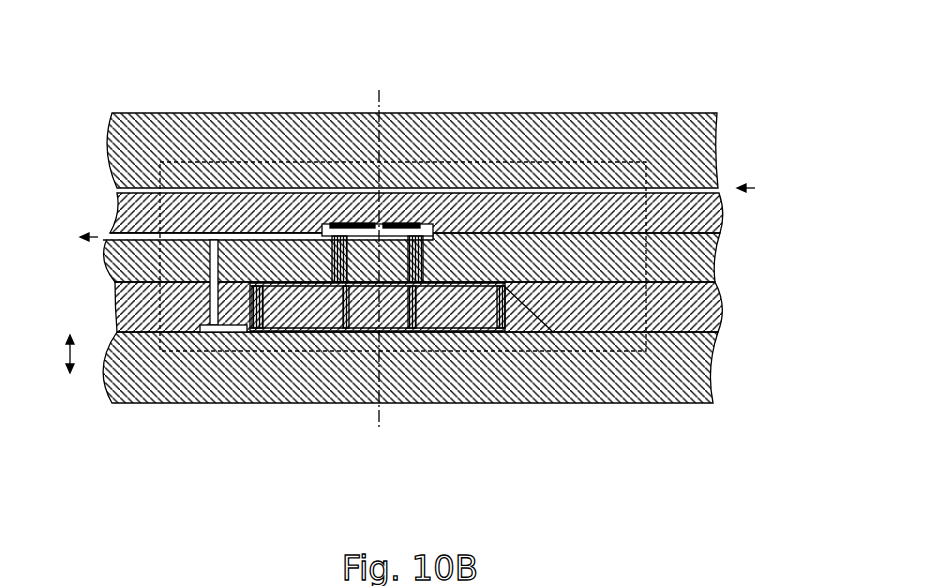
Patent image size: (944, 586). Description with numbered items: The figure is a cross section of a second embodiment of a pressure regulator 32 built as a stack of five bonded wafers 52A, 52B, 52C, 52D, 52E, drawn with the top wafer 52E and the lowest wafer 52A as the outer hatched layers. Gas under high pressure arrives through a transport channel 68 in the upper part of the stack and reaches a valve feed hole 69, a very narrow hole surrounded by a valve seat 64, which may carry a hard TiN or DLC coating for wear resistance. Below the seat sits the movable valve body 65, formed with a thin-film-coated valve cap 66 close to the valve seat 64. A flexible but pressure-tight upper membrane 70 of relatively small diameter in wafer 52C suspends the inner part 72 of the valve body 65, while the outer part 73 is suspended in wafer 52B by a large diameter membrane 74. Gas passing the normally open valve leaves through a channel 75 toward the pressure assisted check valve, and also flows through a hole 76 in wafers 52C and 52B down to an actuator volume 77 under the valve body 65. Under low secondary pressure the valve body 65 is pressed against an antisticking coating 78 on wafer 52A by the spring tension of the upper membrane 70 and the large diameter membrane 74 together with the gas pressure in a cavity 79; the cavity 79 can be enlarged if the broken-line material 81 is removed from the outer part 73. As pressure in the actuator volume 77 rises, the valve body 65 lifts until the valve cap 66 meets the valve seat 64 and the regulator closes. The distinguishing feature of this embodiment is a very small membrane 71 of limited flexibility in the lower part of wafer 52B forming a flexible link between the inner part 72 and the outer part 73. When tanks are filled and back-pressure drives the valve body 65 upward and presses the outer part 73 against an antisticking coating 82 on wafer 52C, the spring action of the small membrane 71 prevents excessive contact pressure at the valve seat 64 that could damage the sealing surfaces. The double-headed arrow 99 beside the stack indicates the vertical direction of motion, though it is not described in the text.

The wafer 52A is at (710, 367).
The wafer 52B is at (716, 308).
The wafer 52C is at (715, 250).
The wafer 52D is at (718, 224).
The wafer 52E is at (708, 141).
The pressure regulator 32 is at (615, 333).
The valve seat 64 is at (355, 224).
The valve body 65 is at (366, 333).
The valve cap 66 is at (384, 224).
The transport channel 68 is at (592, 190).
The valve feed hole 69 is at (377, 115).
The upper membrane 70 is at (333, 235).
The small membrane 71 is at (325, 333).
The inner part 72 is at (390, 333).
The outer part 73 is at (262, 333).
The large diameter membrane 74 is at (233, 333).
The channel 75 is at (187, 238).
The hole 76 is at (213, 303).
The actuator volume 77 is at (490, 333).
The antisticking coating 78 is at (285, 333).
The cavity 79 is at (200, 333).
The material 81 is at (300, 333).
The antisticking coating 82 is at (302, 283).
The direction arrow 99 is at (49, 352).